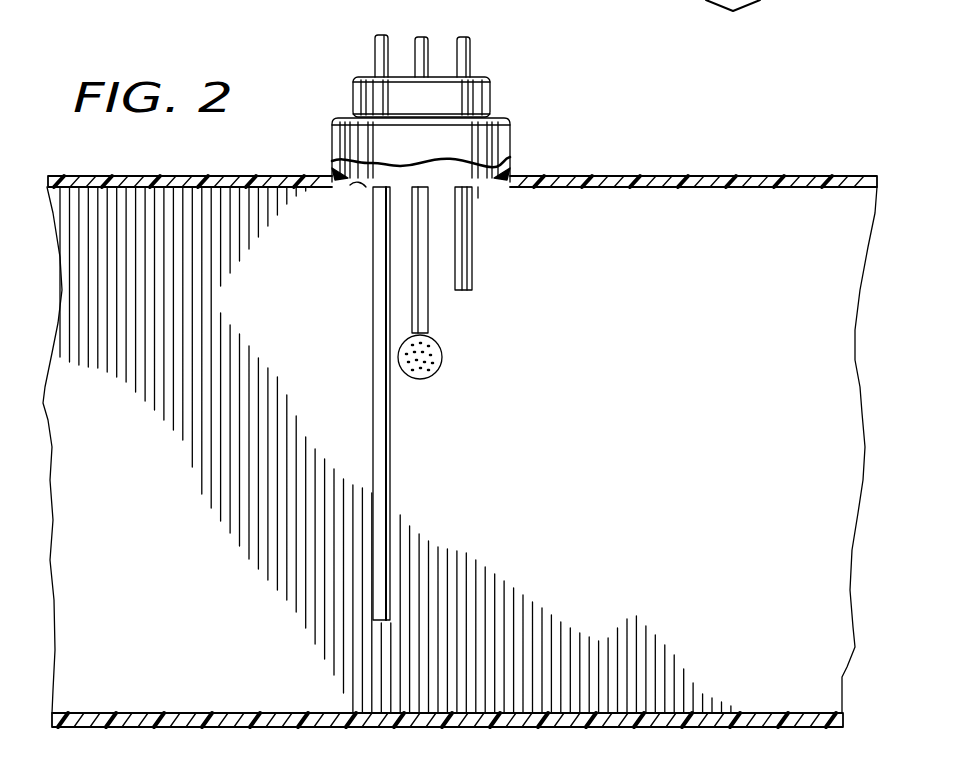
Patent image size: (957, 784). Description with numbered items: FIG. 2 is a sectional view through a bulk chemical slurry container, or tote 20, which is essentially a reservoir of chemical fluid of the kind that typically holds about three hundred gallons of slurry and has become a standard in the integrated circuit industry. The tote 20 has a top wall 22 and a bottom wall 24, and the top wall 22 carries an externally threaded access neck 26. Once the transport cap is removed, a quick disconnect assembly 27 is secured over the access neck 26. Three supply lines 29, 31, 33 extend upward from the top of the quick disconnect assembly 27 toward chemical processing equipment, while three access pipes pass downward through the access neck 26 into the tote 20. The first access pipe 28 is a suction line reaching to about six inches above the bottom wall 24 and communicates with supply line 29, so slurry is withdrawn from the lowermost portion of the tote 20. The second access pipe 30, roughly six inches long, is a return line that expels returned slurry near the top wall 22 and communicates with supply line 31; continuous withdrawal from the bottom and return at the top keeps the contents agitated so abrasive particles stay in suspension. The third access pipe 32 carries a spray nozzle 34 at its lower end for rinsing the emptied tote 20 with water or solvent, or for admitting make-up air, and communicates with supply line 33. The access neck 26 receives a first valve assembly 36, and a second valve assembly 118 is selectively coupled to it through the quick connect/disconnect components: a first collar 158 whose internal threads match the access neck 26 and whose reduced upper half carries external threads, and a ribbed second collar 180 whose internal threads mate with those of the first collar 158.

The bulk chemical slurry container (tote) 20 is at (693, 456).
The top wall 22 is at (645, 175).
The bottom wall 24 is at (631, 712).
The access neck 26 is at (364, 184).
The quick disconnect assembly 27 is at (498, 97).
The first access pipe 28 is at (390, 578).
The supply line 29 is at (377, 44).
The second access pipe 30 is at (472, 258).
The supply line 31 is at (432, 46).
The third access pipe 32 is at (429, 313).
The supply line 33 is at (479, 68).
The sensor ball 34 is at (442, 353).
The first valve assembly 36 is at (481, 199).
The second valve assembly 118 is at (490, 61).
The first collar 158 is at (508, 133).
The second collar 180 is at (354, 88).